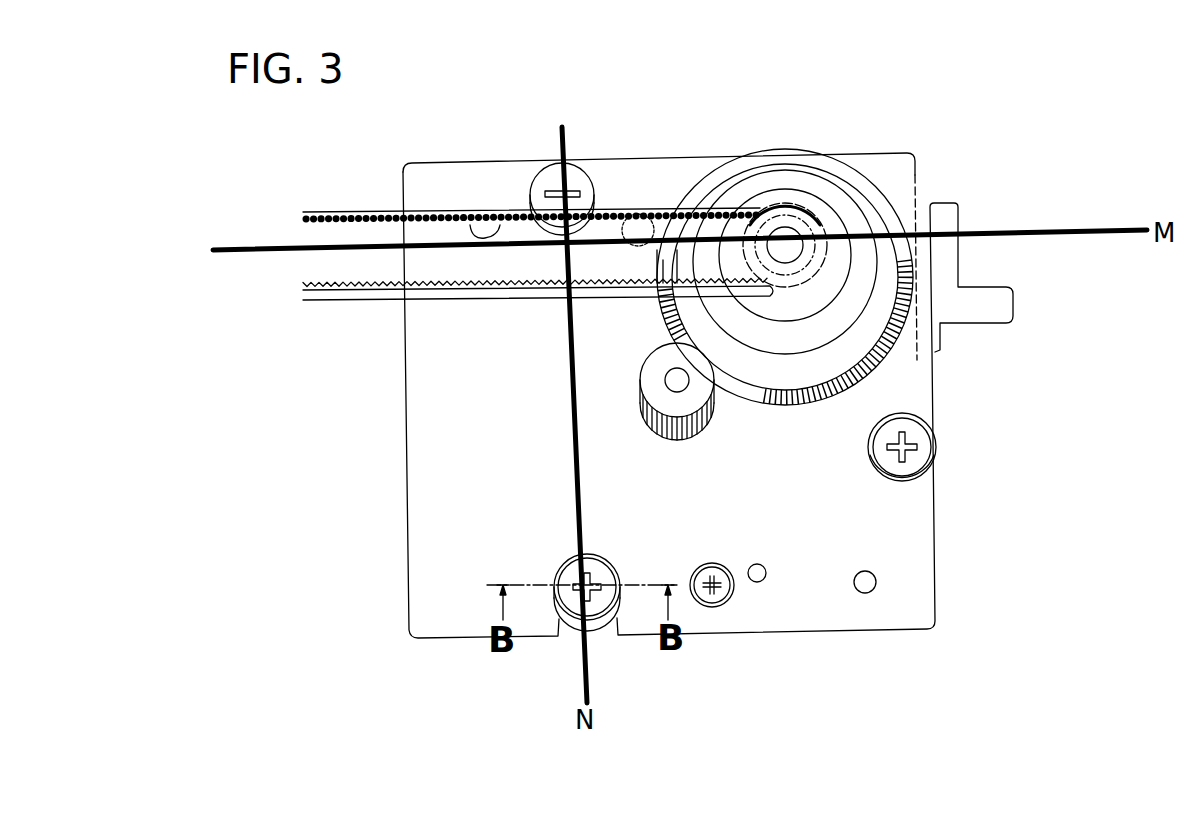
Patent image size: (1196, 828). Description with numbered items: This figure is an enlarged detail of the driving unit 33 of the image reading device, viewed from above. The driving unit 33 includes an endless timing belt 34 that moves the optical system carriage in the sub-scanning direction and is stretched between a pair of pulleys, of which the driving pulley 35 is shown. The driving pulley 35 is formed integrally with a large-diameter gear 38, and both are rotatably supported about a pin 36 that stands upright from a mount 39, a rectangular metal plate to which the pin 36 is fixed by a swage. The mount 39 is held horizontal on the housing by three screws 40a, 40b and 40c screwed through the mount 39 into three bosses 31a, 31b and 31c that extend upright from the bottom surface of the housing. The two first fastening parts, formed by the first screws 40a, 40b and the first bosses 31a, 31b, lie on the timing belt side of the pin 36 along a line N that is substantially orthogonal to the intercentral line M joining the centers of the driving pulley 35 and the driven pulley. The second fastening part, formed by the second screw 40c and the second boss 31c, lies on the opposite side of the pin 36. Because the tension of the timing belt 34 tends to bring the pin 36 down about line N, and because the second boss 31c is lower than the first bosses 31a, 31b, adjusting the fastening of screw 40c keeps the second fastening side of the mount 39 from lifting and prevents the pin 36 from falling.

The driving unit 33 is at (865, 128).
The timing belt 34 is at (475, 300).
The driving pulley 35 is at (807, 205).
The pin 36 is at (788, 220).
The large-diameter gear 38 is at (813, 407).
The mount 39 is at (640, 390).
The first boss 31a is at (543, 167).
The first boss 31b is at (570, 630).
The second boss 31c is at (937, 468).
The first screw 40a is at (573, 177).
The first screw 40b is at (570, 558).
The second screw 40c is at (927, 452).